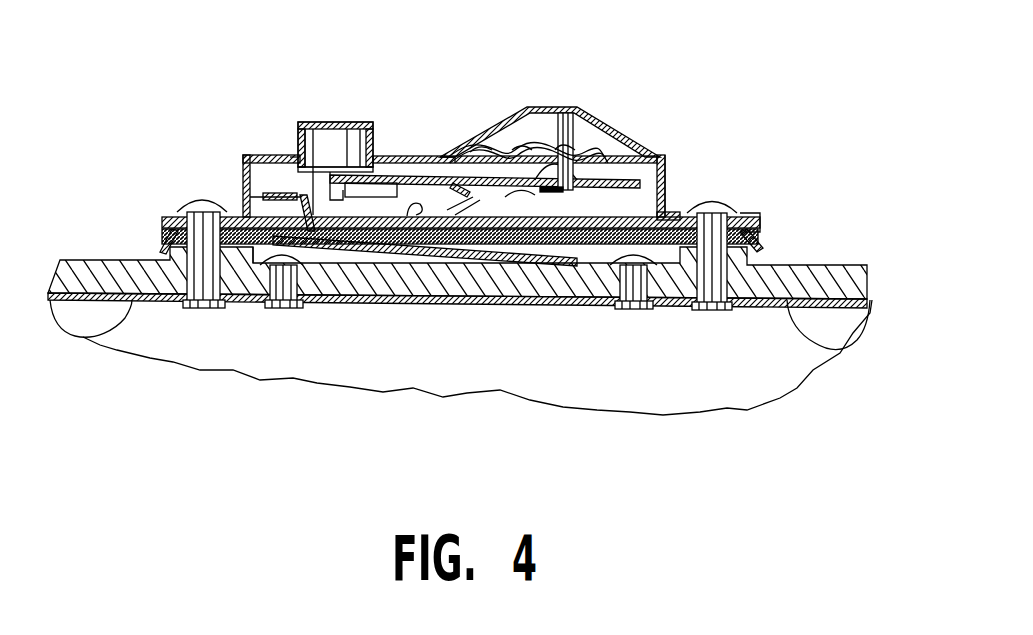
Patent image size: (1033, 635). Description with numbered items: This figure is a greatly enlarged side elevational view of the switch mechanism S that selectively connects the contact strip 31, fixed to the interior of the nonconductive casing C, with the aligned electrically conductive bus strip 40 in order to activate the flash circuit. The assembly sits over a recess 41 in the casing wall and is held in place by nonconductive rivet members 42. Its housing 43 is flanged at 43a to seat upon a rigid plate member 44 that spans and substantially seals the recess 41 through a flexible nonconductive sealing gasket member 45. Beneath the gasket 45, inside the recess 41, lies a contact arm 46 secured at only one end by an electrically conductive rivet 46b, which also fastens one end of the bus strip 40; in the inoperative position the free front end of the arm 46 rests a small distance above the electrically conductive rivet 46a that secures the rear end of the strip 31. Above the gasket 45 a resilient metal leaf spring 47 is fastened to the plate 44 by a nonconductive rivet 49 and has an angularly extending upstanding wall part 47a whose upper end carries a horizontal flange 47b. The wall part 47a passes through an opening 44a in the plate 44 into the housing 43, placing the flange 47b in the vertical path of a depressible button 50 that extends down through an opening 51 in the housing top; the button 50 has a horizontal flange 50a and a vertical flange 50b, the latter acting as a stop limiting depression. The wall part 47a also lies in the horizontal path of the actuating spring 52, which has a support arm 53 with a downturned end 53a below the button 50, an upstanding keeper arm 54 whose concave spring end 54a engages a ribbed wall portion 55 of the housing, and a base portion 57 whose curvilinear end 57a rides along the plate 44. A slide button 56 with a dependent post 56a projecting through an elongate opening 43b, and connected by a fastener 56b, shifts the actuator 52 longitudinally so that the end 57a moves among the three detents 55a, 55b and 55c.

The switch mechanism S is at (167, 213).
The nonconductive casing C is at (140, 260).
The contact strip 31 is at (87, 336).
The bus strip 40 is at (835, 350).
The recess 41 is at (399, 262).
The rivet members 42 is at (203, 300).
The housing 43 is at (665, 186).
The flange 43a is at (683, 212).
The elongate opening 43b is at (443, 158).
The plate member 44 is at (740, 222).
The opening 44a is at (317, 210).
The sealing gasket member 45 is at (758, 248).
The contact arm 46 is at (345, 275).
The rivet 46a is at (283, 300).
The rivet 46b is at (650, 306).
The leaf spring 47 is at (550, 232).
The wall part 47a is at (250, 216).
The flange 47b is at (296, 210).
The rivet 49 is at (670, 178).
The depressible button 50 is at (302, 124).
The horizontal flange 50a is at (299, 207).
The vertical flange 50b is at (417, 220).
The opening 51 is at (291, 157).
The actuating spring 52 is at (665, 155).
The support arm 53 is at (397, 177).
The downturned end 53a is at (338, 175).
The keeper arm 54 is at (577, 178).
The spring end 54a is at (523, 223).
The ribbed wall portion 55 is at (496, 148).
The detent 55a is at (562, 148).
The detent 55b is at (521, 146).
The detent 55c is at (481, 156).
The slide button 56 is at (574, 134).
The post 56a is at (578, 137).
The fastener 56b is at (527, 238).
The base portion 57 is at (545, 197).
The curvilinear end 57a is at (440, 255).